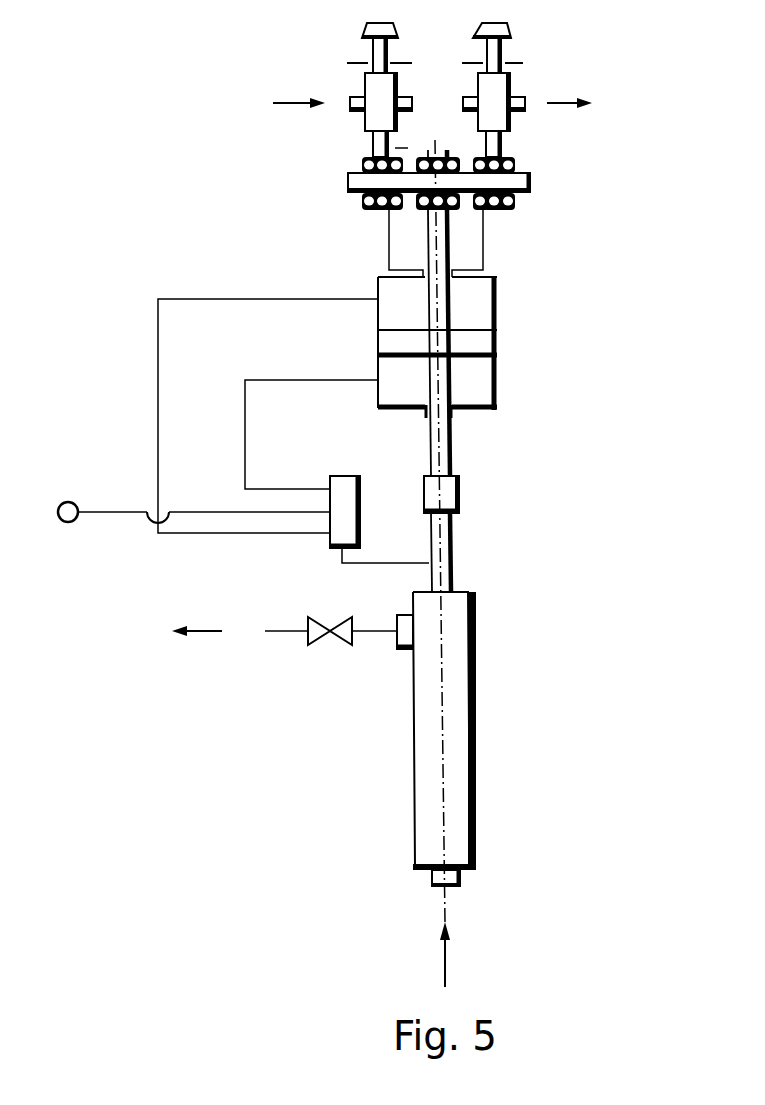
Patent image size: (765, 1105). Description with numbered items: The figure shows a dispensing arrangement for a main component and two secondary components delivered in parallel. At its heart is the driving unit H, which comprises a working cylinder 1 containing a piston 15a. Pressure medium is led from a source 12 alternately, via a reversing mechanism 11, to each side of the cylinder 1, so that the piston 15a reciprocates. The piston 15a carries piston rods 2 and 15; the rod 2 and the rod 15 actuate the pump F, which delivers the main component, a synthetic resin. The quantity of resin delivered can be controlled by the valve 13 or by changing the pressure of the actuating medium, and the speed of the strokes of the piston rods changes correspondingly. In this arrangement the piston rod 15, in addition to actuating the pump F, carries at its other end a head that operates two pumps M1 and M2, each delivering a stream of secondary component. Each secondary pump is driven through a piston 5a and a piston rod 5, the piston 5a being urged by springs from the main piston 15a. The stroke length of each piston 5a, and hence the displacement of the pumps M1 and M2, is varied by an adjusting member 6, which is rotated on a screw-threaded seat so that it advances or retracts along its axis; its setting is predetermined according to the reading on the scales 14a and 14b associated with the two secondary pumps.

The working cylinder 1 is at (497, 303).
The piston rod 2 is at (447, 570).
The piston rod 5 is at (515, 182).
The piston 5a is at (375, 145).
The adjusting member 6 is at (367, 32).
The reversing mechanism 11 is at (330, 547).
The source of pressure medium 12 is at (63, 522).
The valve 13 is at (317, 645).
The scale 14a is at (363, 65).
The scale 14b is at (510, 67).
The piston rod 15 is at (438, 233).
The piston 15a is at (487, 343).
The pump F is at (457, 760).
The driving unit H is at (392, 313).
The pump M1 is at (500, 117).
The pump M2 is at (378, 113).